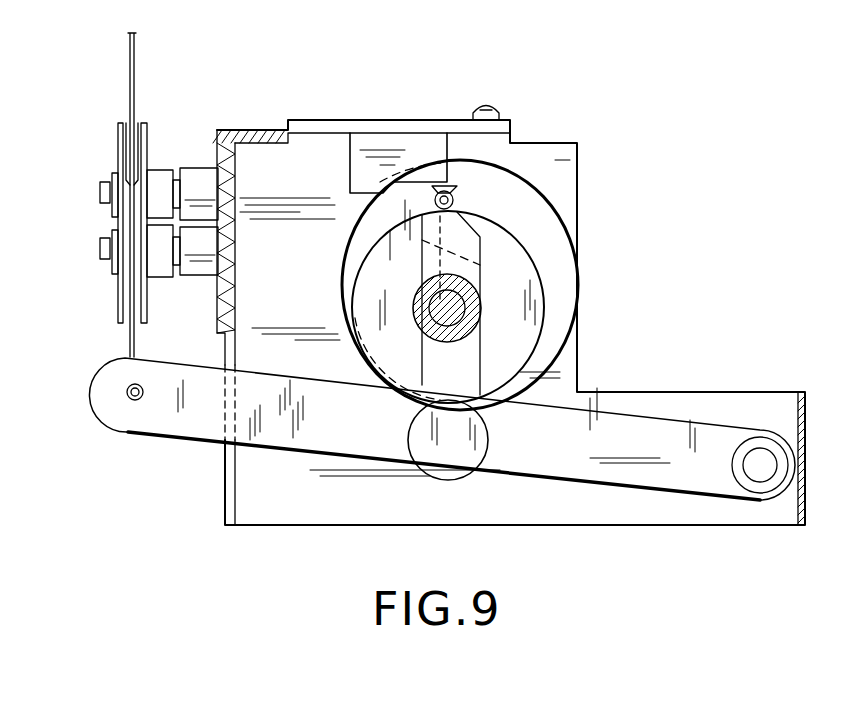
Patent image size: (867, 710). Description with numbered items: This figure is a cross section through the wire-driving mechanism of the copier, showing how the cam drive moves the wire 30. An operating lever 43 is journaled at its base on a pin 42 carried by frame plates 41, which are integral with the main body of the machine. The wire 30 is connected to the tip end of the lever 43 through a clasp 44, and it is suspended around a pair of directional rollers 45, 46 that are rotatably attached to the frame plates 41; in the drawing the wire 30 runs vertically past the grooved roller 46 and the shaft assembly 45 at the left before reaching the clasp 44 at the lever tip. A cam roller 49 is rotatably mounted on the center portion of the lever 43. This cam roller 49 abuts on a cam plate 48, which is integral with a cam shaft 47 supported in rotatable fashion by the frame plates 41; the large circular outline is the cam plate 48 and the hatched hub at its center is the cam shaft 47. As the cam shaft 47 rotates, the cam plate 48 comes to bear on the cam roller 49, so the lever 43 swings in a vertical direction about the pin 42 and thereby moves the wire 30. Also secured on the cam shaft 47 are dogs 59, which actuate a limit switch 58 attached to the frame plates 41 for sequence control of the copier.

The wire 30 is at (135, 62).
The frame plates 41 is at (315, 148).
The pin 42 is at (760, 455).
The operating lever 43 is at (570, 470).
The clasp 44 is at (137, 401).
The directional roller 45 is at (118, 305).
The directional roller 46 is at (118, 152).
The cam shaft 47 is at (480, 318).
The cam plate 48 is at (510, 185).
The cam roller 49 is at (445, 478).
The limit switch 58 is at (408, 150).
The dogs 59 is at (550, 265).